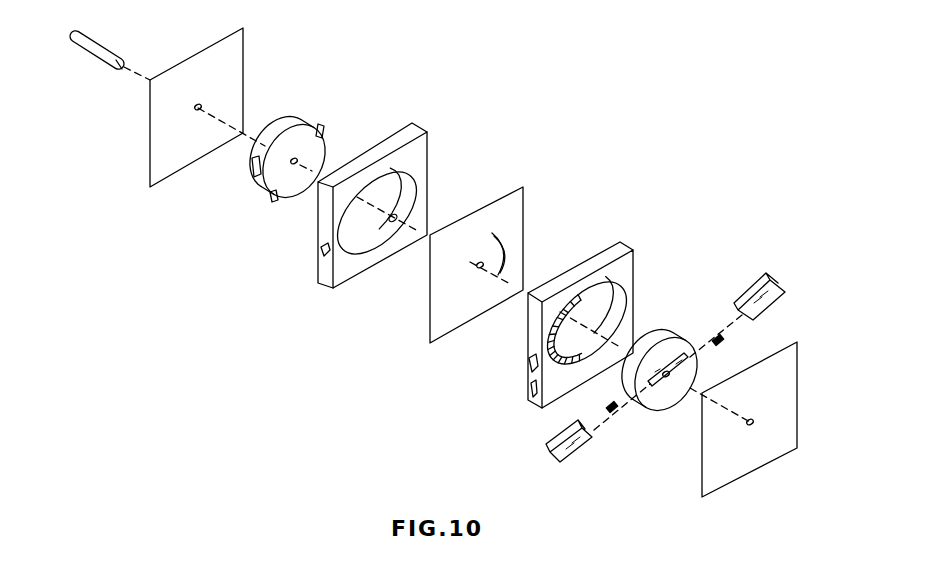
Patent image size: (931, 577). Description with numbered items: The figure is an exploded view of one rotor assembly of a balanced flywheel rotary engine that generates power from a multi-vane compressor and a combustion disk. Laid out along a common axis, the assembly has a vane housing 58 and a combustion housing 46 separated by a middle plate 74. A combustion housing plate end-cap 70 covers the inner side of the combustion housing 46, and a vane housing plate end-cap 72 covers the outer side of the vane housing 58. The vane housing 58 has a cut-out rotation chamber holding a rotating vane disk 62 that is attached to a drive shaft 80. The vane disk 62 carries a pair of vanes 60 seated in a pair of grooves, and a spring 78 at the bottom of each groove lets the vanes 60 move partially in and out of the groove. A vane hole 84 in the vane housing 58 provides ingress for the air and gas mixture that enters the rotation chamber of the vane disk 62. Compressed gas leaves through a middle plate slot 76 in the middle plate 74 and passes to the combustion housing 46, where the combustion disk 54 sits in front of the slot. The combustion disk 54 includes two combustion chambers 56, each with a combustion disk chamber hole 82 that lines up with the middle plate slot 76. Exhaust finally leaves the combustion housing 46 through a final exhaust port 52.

The combustion housing 46 is at (420, 180).
The final exhaust port 52 is at (322, 250).
The combustion disk 54 is at (302, 113).
The combustion chamber 56 is at (252, 164).
The vane housing 58 is at (617, 243).
The vane 60 is at (548, 440).
The vane disk 62 is at (675, 405).
The combustion housing plate end-cap 70 is at (237, 50).
The vane housing plate end-cap 72 is at (725, 470).
The middle plate 74 is at (523, 187).
The middle plate slot 76 is at (498, 233).
The spring 78 is at (609, 406).
The drive shaft 80 is at (97, 42).
The combustion disk chamber hole 82 is at (323, 132).
The vane hole 84 is at (528, 358).